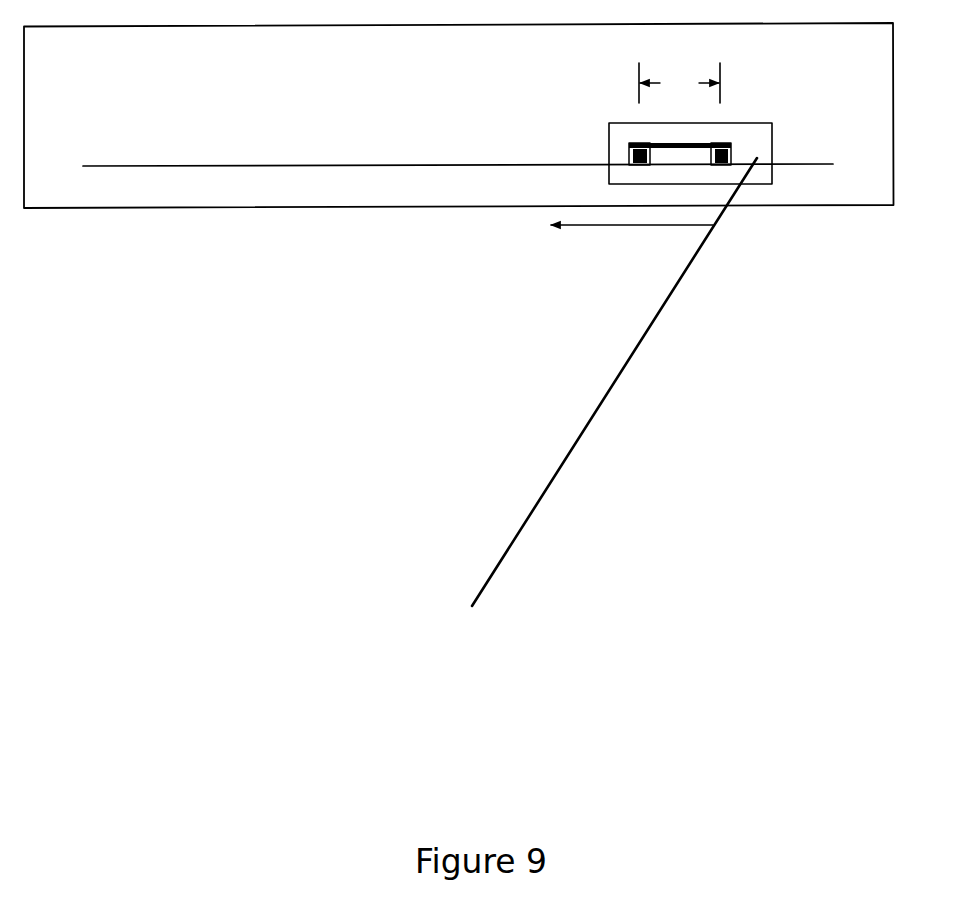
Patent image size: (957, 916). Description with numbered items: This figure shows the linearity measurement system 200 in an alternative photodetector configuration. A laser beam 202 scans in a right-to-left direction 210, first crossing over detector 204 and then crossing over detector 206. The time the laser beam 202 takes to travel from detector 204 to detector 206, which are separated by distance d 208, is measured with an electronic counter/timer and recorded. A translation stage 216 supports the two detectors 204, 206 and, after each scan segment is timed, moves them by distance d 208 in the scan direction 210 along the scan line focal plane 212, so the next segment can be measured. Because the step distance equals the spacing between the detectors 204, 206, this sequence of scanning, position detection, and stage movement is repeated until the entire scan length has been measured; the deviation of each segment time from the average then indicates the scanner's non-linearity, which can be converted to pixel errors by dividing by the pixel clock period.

The linearity measurement system 200 is at (459, 291).
The laser beam 202 is at (592, 406).
The detector 204 is at (737, 145).
The detector 206 is at (627, 145).
The distance d 208 is at (679, 77).
The scan direction 210 is at (580, 225).
The scan line focal plane 212 is at (222, 171).
The translation stage 216 is at (690, 148).